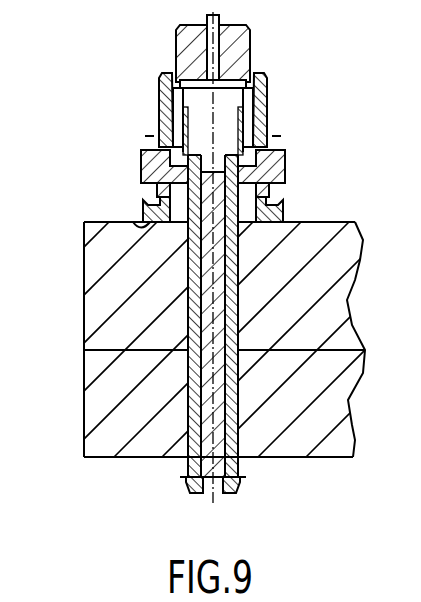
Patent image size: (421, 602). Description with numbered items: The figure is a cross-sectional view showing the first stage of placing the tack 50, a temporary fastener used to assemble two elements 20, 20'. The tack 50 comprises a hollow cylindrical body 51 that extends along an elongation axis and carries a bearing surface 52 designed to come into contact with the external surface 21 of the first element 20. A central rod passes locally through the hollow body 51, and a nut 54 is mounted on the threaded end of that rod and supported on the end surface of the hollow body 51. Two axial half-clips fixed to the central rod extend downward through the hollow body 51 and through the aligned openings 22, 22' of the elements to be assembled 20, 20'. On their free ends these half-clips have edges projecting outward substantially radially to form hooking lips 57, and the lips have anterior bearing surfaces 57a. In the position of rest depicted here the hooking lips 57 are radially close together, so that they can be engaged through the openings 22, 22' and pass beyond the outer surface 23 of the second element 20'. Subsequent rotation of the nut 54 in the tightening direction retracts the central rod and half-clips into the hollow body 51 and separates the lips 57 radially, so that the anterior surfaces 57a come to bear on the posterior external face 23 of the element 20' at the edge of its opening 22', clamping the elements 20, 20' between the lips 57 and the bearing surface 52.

The tack 50 is at (108, 90).
The nut 54 is at (159, 113).
The hollow cylindrical body 51 is at (288, 168).
The bearing surface 52 is at (136, 224).
The external surface 21 is at (312, 222).
The element 20 is at (210, 339).
The element 20' is at (71, 427).
The opening 22 is at (135, 252).
The opening 22' is at (136, 413).
The outer surface 23 is at (120, 458).
The hooking lips 57 is at (240, 487).
The anterior surfaces of the bearing 57a is at (187, 479).